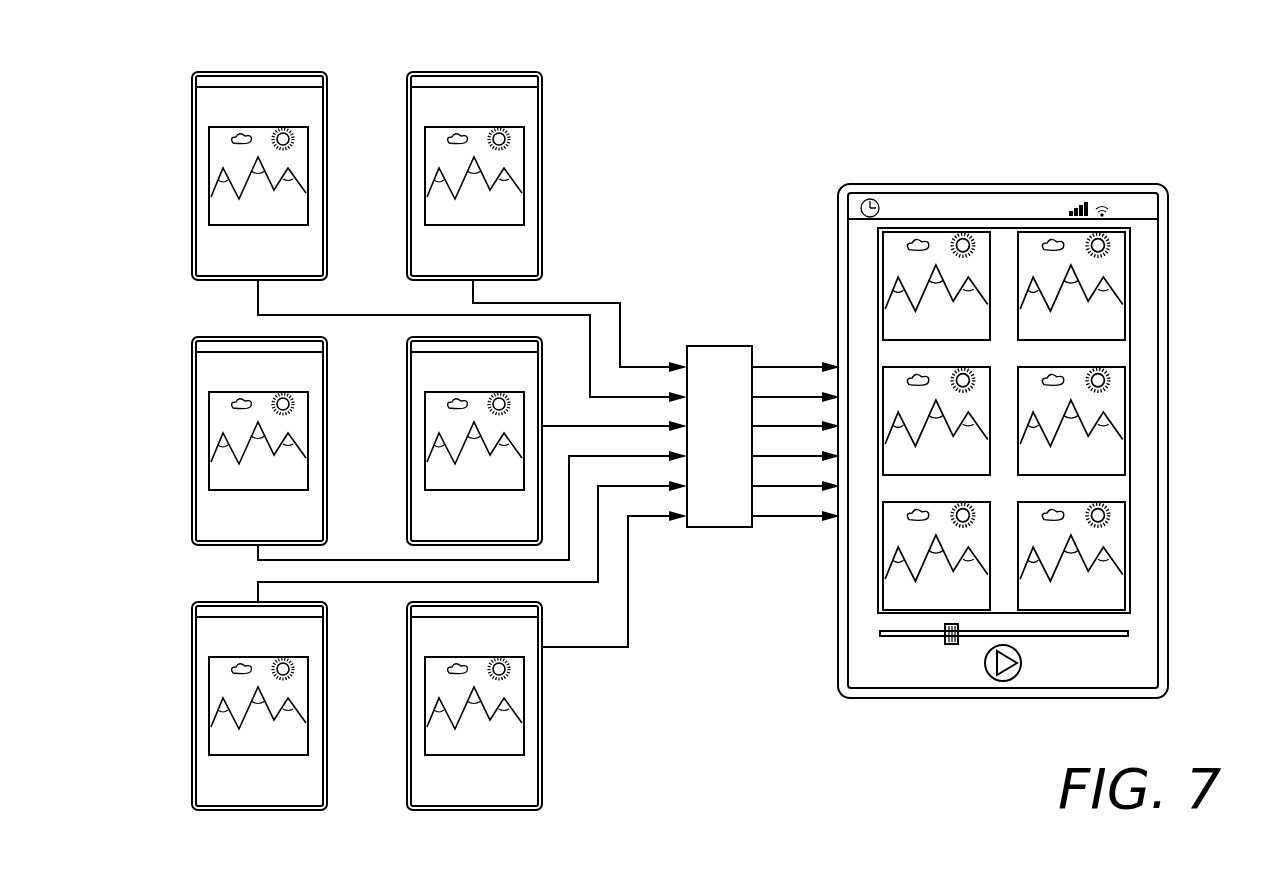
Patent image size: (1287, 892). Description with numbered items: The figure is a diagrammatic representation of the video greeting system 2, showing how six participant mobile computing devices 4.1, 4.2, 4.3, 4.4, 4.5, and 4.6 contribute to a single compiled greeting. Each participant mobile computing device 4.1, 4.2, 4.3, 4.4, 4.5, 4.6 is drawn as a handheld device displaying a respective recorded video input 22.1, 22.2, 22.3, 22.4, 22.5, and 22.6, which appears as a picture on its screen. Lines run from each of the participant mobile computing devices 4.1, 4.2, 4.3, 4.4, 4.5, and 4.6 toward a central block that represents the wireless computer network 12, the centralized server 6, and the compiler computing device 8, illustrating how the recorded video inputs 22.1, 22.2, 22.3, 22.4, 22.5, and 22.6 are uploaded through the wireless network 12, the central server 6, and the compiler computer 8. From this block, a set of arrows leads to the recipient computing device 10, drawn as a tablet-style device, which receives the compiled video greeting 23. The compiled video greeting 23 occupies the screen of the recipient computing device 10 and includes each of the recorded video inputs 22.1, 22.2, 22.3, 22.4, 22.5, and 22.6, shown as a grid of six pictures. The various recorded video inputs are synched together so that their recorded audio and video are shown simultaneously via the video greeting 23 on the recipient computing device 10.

The video greeting system 2 is at (1165, 129).
The participant mobile computing device 4.1 is at (308, 72).
The participant mobile computing device 4.2 is at (523, 72).
The participant mobile computing device 4.3 is at (308, 337).
The participant mobile computing device 4.4 is at (524, 337).
The participant mobile computing device 4.5 is at (308, 602).
The participant mobile computing device 4.6 is at (524, 602).
The recorded video input 22.1 is at (308, 127).
The recorded video input 22.2 is at (524, 127).
The recorded video input 22.3 is at (308, 392).
The recorded video input 22.4 is at (425, 422).
The recorded video input 22.5 is at (308, 657).
The recorded video input 22.6 is at (524, 686).
The centralized server 6 is at (730, 406).
The compiler computing device 8 is at (730, 406).
The wireless computer network 12 is at (687, 346).
The recipient computing device 10 is at (1157, 183).
The compiled video greeting 23 is at (1130, 258).